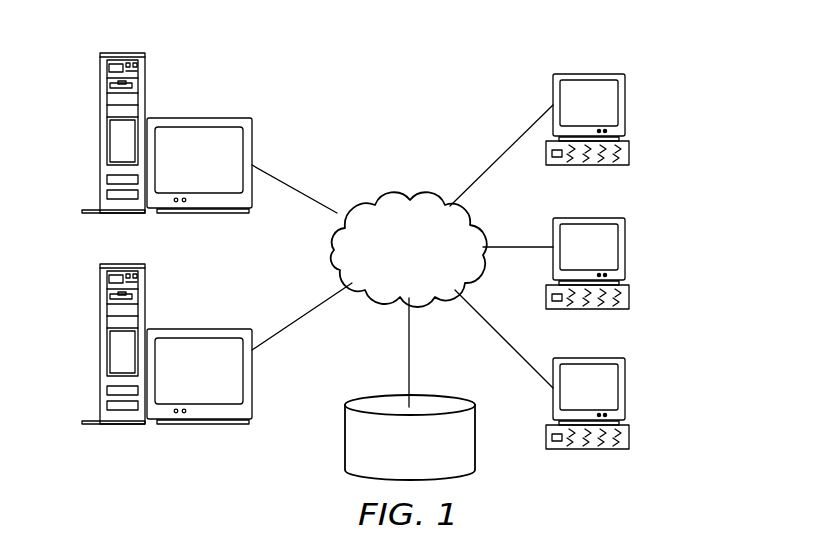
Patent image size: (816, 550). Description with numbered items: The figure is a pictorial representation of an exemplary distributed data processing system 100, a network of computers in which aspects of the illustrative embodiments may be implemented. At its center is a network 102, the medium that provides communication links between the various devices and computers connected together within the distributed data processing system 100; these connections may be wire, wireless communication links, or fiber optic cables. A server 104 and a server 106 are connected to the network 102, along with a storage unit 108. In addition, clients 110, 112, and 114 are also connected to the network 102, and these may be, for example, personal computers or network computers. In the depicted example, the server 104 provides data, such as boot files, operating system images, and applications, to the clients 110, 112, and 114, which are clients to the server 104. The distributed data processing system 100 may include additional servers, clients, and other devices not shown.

The distributed data processing system 100 is at (468, 58).
The network 102 is at (381, 196).
The server 104 is at (100, 135).
The server 106 is at (100, 343).
The storage unit 108 is at (345, 437).
The client 110 is at (625, 105).
The client 112 is at (625, 248).
The client 114 is at (625, 390).